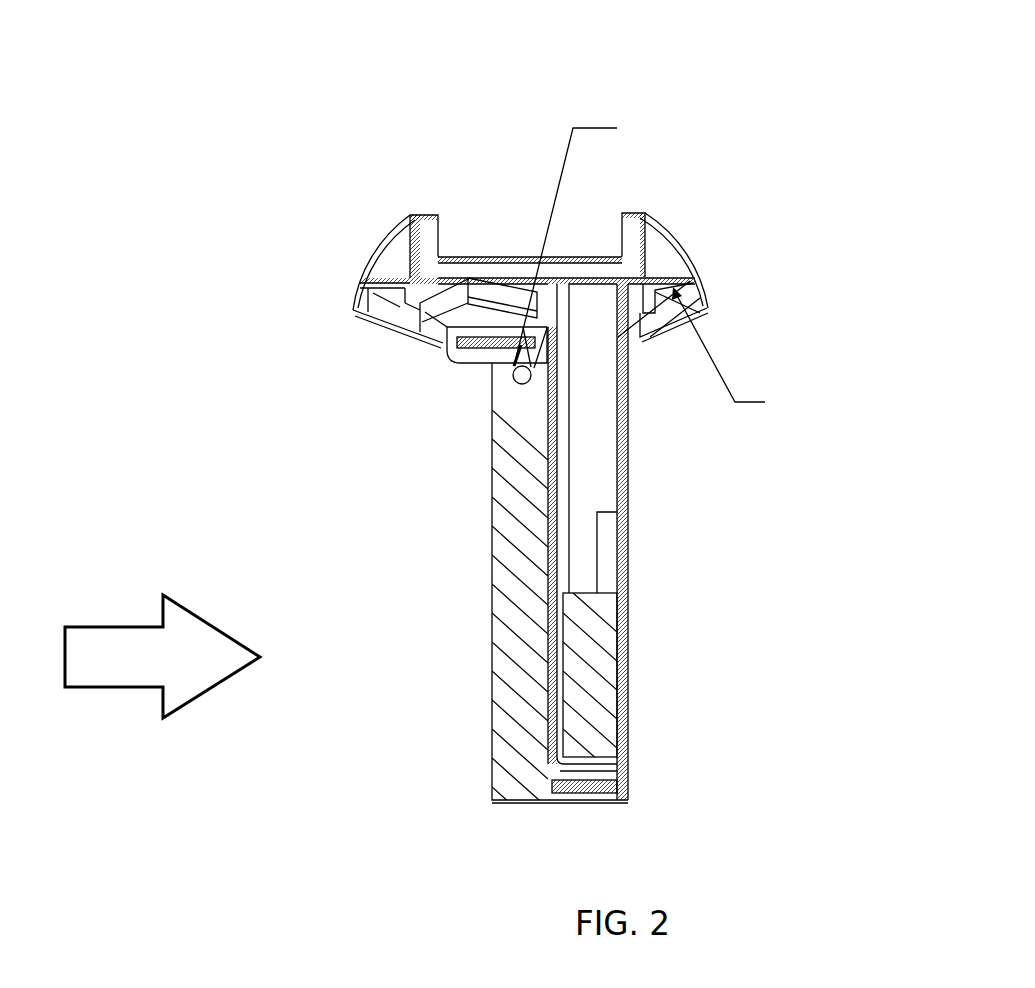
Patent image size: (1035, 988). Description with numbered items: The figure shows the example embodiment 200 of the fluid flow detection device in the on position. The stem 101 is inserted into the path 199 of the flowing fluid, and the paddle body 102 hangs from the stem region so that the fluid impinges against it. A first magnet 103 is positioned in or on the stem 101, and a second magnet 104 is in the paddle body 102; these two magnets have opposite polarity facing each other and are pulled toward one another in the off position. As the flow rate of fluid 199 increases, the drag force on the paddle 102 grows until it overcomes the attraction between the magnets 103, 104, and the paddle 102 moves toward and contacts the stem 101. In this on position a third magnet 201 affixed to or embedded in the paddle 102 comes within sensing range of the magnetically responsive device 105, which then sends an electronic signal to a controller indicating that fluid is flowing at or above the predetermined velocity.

The example embodiment in the on position 200 is at (625, 36).
The stem portion 101 is at (622, 272).
The paddle body 102 is at (487, 748).
The first magnet 103 is at (395, 675).
The second magnet 104 is at (505, 305).
The magnetically responsive device 105 is at (589, 643).
The path of the flowing fluid 199 is at (162, 656).
The third magnet 201 is at (588, 785).